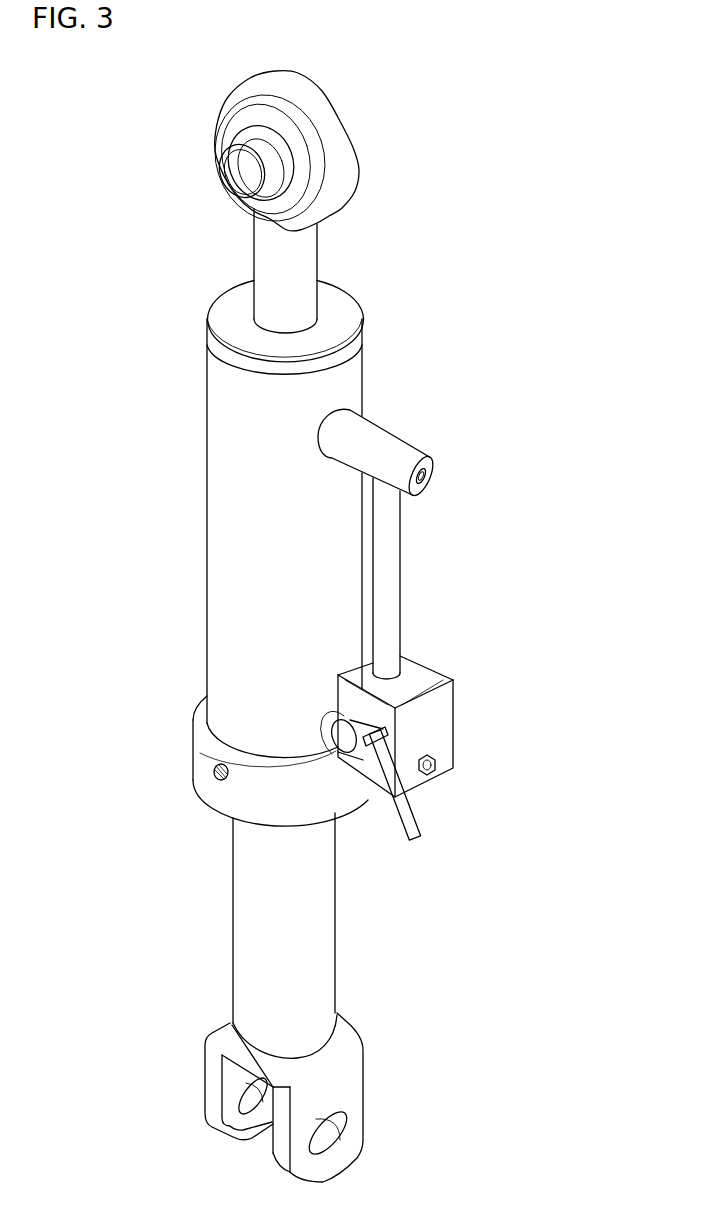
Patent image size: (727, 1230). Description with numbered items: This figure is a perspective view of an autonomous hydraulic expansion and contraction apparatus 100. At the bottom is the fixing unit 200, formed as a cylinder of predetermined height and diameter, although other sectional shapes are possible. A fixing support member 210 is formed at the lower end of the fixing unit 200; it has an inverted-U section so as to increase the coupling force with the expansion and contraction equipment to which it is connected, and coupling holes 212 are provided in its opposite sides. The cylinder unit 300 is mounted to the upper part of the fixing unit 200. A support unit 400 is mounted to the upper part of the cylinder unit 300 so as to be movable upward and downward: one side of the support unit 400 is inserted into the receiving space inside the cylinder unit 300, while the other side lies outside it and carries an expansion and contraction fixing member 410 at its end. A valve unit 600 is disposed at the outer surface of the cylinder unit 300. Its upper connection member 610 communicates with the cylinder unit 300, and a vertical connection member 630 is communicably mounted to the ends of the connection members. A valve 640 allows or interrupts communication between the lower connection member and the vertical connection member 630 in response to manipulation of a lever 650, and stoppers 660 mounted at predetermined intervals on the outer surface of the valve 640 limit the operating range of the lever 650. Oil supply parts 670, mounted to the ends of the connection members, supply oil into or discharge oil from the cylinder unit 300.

The autonomous hydraulic expansion and contraction apparatus 100 is at (557, 362).
The fixing unit 200 is at (243, 918).
The fixing support member 210 is at (350, 1082).
The coupling holes 212 is at (337, 1135).
The cylinder unit 300 is at (223, 527).
The support unit 400 is at (253, 262).
The expansion and contraction fixing member 410 is at (218, 117).
The valve unit 600 is at (400, 577).
The upper connection member 610 is at (392, 428).
The vertical connection member 630 is at (398, 623).
The valve 640 is at (442, 718).
The lever 650 is at (420, 840).
The stoppers 660 is at (440, 760).
The oil supply parts 670 is at (435, 480).